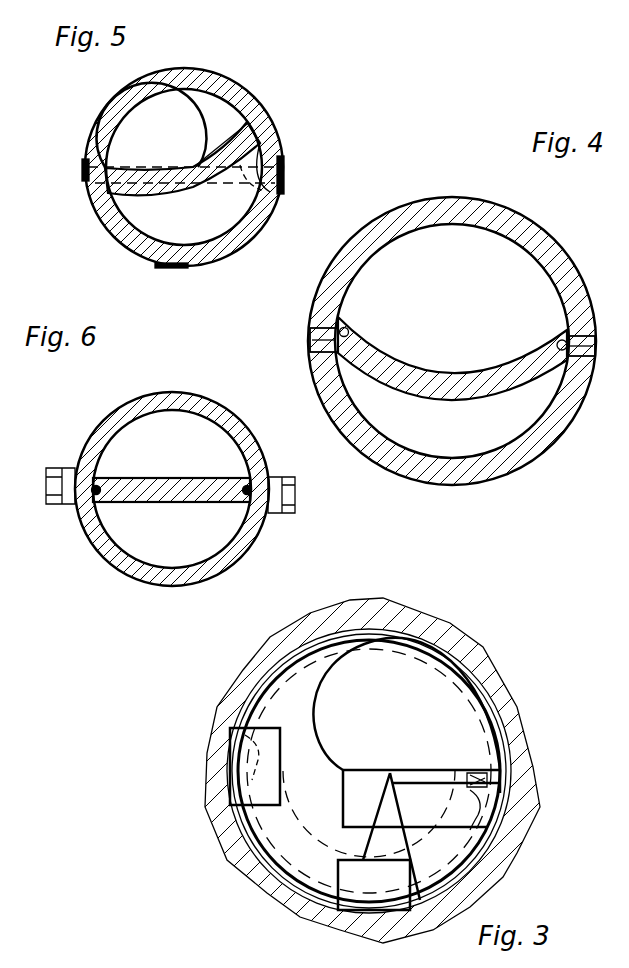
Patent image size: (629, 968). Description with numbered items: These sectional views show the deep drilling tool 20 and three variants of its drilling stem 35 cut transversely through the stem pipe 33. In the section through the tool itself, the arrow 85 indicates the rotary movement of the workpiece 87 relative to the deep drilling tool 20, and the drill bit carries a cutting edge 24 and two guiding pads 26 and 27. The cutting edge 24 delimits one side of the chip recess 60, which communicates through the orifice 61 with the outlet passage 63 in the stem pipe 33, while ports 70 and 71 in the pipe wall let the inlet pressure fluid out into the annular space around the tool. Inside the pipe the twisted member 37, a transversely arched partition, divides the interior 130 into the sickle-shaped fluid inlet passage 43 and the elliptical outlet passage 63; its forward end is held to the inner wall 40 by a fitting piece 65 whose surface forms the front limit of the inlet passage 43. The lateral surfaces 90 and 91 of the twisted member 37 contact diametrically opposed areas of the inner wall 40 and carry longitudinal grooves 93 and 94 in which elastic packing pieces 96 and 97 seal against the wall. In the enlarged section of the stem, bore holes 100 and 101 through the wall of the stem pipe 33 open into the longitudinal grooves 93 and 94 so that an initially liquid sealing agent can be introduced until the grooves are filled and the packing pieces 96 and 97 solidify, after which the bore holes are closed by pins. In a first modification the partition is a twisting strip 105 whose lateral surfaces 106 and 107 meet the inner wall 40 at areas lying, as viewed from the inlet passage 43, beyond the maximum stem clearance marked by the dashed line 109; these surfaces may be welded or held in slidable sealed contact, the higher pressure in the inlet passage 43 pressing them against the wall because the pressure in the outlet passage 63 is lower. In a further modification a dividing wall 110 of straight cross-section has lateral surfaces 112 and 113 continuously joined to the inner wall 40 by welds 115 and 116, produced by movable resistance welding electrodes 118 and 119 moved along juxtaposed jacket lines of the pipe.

In FIG. 3, the deep drilling tool 20 is at (308, 652).
In FIG. 5, the cutting edge 24 is at (80, 170).
In FIG. 3, the cutting edge 24 is at (505, 776).
In FIG. 5, the guiding pad 26 is at (171, 272).
In FIG. 3, the guiding pad 26 is at (340, 896).
In FIG. 5, the guiding pad 27 is at (284, 170).
In FIG. 3, the guiding pad 27 is at (230, 725).
In FIG. 5, the stem pipe 33 is at (105, 225).
In FIG. 4, the stem pipe 33 is at (490, 483).
In FIG. 6, the stem pipe 33 is at (150, 392).
In FIG. 3, the stem pipe 33 is at (262, 842).
In FIG. 5, the drilling stem 35 is at (208, 66).
In FIG. 6, the drilling stem 35 is at (238, 405).
In FIG. 4, the twisted member 37 is at (548, 425).
In FIG. 3, the twisted member 37 is at (270, 868).
In FIG. 5, the inner wall 40 is at (238, 228).
In FIG. 4, the inner wall 40 is at (412, 238).
In FIG. 6, the inner wall 40 is at (135, 545).
In FIG. 3, the inner wall 40 is at (369, 771).
In FIG. 5, the fluid inlet passage 43 is at (205, 226).
In FIG. 4, the fluid inlet passage 43 is at (408, 428).
In FIG. 6, the fluid inlet passage 43 is at (182, 548).
In FIG. 3, the fluid inlet passage 43 is at (470, 898).
In FIG. 5, the chip recess 60 is at (173, 98).
In FIG. 3, the chip recess 60 is at (310, 712).
In FIG. 5, the orifice 61 is at (138, 149).
In FIG. 3, the orifice 61 is at (393, 713).
In FIG. 5, the outlet passage 63 is at (220, 105).
In FIG. 4, the outlet passage 63 is at (485, 262).
In FIG. 6, the outlet passage 63 is at (185, 430).
In FIG. 3, the outlet passage 63 is at (290, 715).
In FIG. 3, the fitting piece 65 is at (268, 905).
In FIG. 3, the port 70 is at (232, 809).
In FIG. 3, the port 71 is at (500, 866).
In FIG. 3, the arrow 85 is at (530, 678).
In FIG. 3, the workpiece 87 is at (432, 626).
In FIG. 3, the lateral surface 90 is at (250, 758).
In FIG. 3, the lateral surface 91 is at (505, 833).
In FIG. 4, the longitudinal groove 93 is at (355, 335).
In FIG. 3, the longitudinal groove 93 is at (240, 735).
In FIG. 4, the longitudinal groove 94 is at (548, 345).
In FIG. 3, the longitudinal groove 94 is at (505, 808).
In FIG. 3, the packing piece 96 is at (262, 742).
In FIG. 3, the packing piece 97 is at (472, 778).
In FIG. 4, the bore hole 100 is at (310, 340).
In FIG. 4, the bore hole 101 is at (570, 332).
In FIG. 5, the twisting strip 105 is at (270, 195).
In FIG. 5, the lateral surface 106 is at (108, 186).
In FIG. 5, the lateral surface 107 is at (262, 125).
In FIG. 5, the dashed line 109 is at (284, 180).
In FIG. 6, the dividing wall 110 is at (95, 548).
In FIG. 6, the lateral surface 112 is at (78, 512).
In FIG. 6, the lateral surface 113 is at (260, 510).
In FIG. 6, the weld 115 is at (100, 478).
In FIG. 6, the weld 116 is at (240, 478).
In FIG. 6, the resistance welding electrode 118 is at (57, 465).
In FIG. 6, the resistance welding electrode 119 is at (282, 475).
In FIG. 6, the interior 130 is at (148, 430).